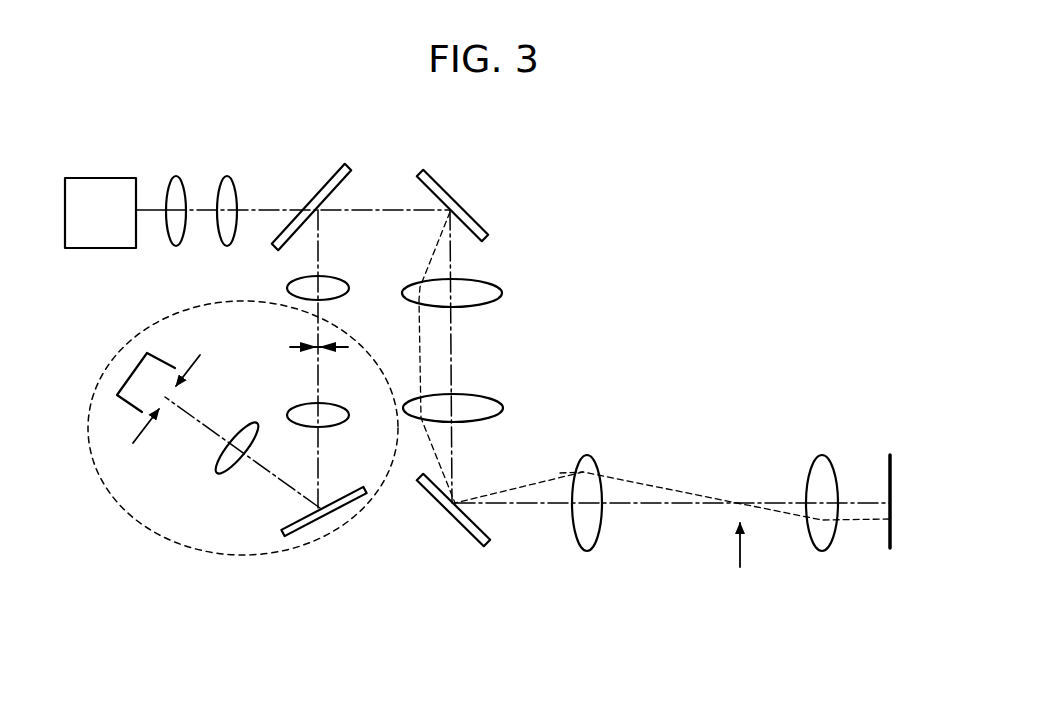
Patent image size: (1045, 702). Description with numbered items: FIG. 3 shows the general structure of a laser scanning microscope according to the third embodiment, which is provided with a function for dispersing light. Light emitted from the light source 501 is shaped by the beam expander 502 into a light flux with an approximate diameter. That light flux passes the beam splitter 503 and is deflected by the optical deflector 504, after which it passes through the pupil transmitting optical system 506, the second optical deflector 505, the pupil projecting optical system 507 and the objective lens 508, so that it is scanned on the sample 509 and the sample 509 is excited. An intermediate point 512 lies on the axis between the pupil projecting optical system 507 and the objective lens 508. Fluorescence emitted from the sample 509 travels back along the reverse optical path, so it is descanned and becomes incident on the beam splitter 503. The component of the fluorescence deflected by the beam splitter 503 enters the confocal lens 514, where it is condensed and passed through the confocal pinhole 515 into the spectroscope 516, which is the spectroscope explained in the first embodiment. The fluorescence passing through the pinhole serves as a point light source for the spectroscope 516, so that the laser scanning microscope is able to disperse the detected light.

The light source 501 is at (108, 178).
The beam expander 502 is at (245, 168).
The beam splitter 503 is at (313, 182).
The optical deflector 504 is at (470, 218).
The second optical deflector 505 is at (432, 495).
The pupil transmitting optical system 506 is at (518, 270).
The pupil projecting optical system 507 is at (585, 553).
The objective lens 508 is at (820, 552).
The sample 509 is at (892, 548).
The focal point 512 is at (740, 566).
The confocal lens 514 is at (286, 286).
The confocal pinhole 515 is at (290, 347).
The spectroscope 516 is at (163, 540).